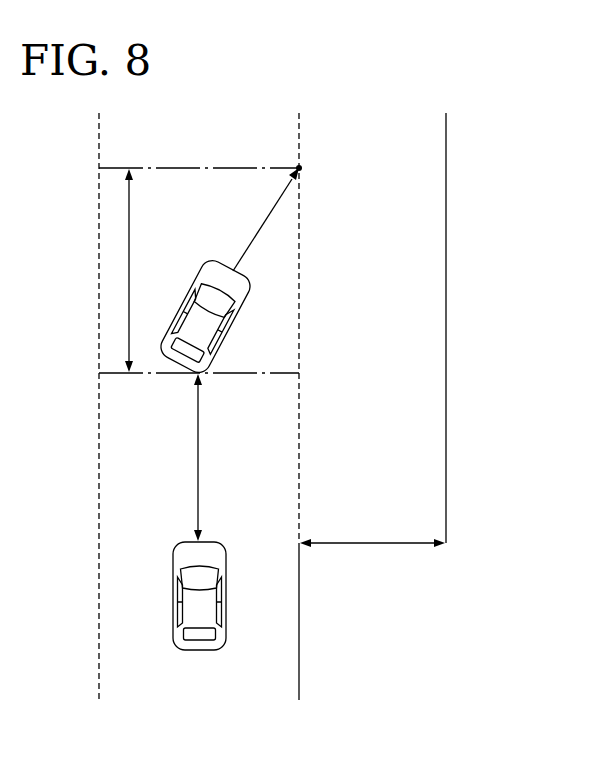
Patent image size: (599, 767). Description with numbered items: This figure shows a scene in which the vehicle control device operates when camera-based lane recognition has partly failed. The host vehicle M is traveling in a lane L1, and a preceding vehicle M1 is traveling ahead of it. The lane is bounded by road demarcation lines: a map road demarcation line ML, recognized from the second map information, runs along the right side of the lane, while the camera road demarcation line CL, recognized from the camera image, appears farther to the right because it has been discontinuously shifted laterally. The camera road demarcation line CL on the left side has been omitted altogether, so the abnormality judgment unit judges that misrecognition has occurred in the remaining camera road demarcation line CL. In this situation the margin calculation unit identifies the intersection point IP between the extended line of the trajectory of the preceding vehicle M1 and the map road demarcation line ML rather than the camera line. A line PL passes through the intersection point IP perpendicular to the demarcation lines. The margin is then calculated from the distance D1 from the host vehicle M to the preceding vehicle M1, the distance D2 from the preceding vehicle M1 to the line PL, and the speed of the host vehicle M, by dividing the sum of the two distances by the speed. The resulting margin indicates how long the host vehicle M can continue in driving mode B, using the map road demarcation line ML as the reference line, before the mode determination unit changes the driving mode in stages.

The line PL is at (197, 168).
The map road demarcation line ML is at (301, 327).
The camera road demarcation line CL is at (448, 327).
The intersection point IP is at (303, 168).
The preceding vehicle M1 is at (213, 270).
The distance D2 is at (144, 270).
The distance D1 is at (213, 457).
The host vehicle M is at (228, 596).
The lane L1 is at (212, 700).